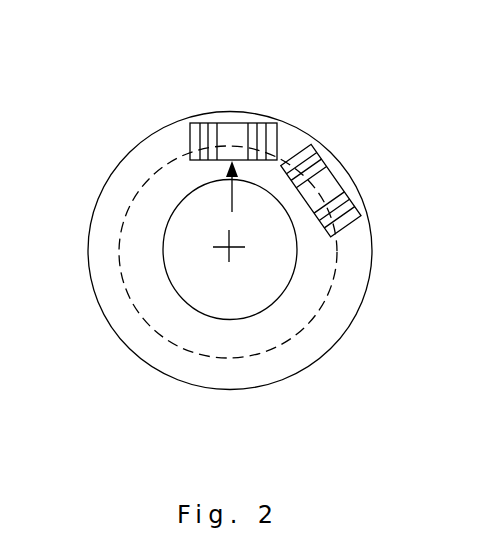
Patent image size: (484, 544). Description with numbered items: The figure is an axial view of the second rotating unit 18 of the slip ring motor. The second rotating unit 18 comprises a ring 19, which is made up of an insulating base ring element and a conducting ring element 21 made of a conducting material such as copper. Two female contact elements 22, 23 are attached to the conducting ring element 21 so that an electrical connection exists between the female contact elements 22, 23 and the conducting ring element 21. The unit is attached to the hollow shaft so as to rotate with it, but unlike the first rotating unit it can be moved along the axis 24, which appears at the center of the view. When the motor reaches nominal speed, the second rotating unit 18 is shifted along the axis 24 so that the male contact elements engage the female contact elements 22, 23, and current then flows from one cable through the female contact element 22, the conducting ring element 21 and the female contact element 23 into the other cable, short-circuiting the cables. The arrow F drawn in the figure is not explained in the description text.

The second rotating unit 18 is at (121, 124).
The ring 19 is at (322, 353).
The conducting ring element 21 is at (343, 285).
The female contact element 22 is at (250, 123).
The female contact element 23 is at (331, 173).
The axis 24 is at (232, 249).
The force direction arrow F is at (230, 196).